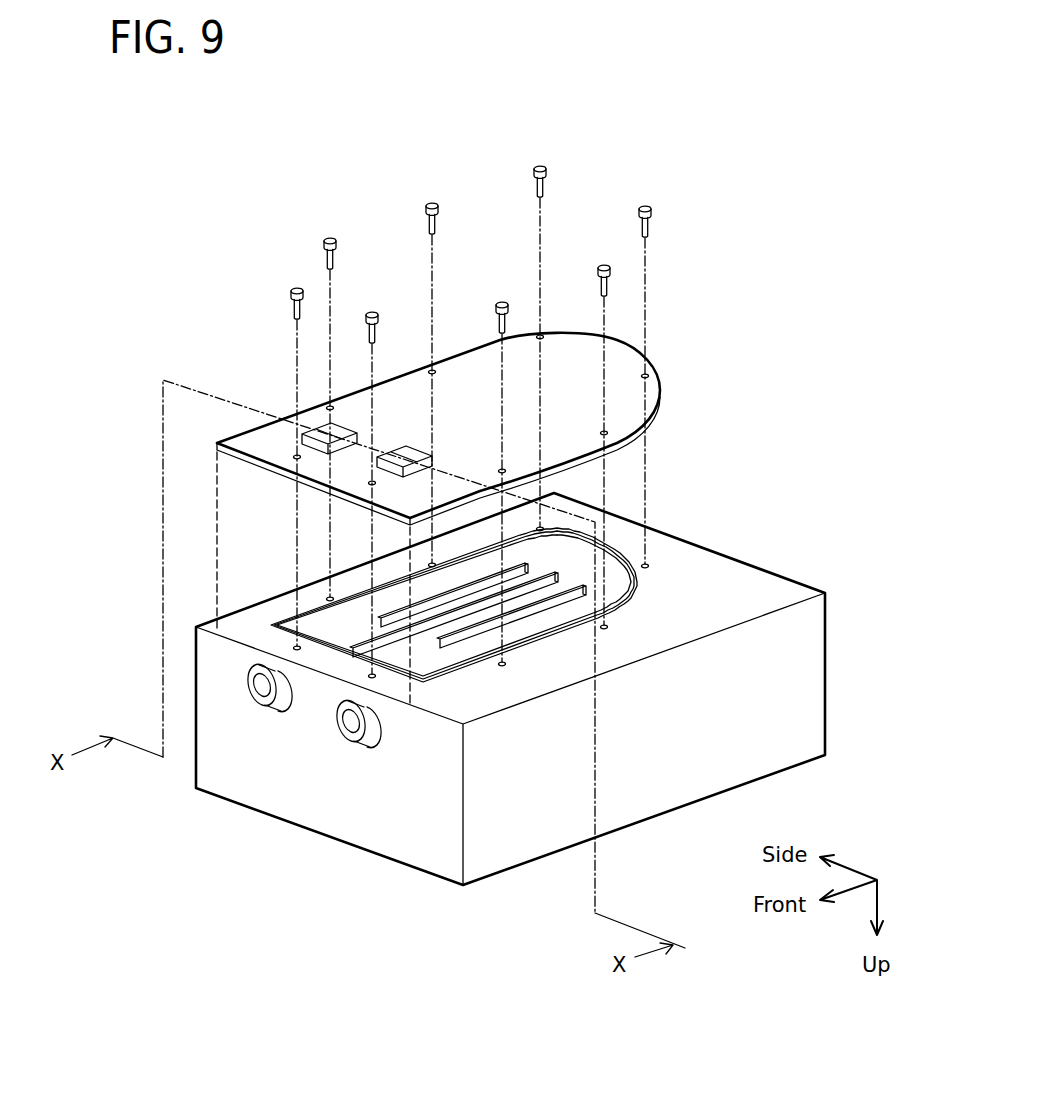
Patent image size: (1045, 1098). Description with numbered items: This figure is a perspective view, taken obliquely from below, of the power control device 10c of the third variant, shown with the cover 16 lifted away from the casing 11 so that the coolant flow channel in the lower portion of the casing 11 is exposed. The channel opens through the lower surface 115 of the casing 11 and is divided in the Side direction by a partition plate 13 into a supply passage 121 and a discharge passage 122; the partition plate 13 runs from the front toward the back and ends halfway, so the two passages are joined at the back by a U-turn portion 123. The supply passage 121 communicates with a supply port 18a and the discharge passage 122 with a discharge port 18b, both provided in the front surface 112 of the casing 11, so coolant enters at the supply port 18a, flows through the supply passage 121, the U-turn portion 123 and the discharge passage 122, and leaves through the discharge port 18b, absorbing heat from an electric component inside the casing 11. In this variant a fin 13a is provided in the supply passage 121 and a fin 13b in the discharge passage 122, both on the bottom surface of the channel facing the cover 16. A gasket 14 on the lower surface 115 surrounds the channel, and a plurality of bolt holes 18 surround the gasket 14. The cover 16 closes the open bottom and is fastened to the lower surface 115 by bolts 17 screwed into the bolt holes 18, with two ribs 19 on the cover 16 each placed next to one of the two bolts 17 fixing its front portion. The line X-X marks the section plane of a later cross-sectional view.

The power control device 10c is at (202, 208).
The casing 11 is at (800, 718).
The front surface 112 is at (210, 731).
The lower surface 115 is at (757, 576).
The gasket 14 is at (282, 624).
The supply passage 121 is at (353, 633).
The discharge passage 122 is at (425, 657).
The U-turn portion 123 is at (612, 588).
The partition plate 13 is at (543, 583).
The fin 13a is at (418, 610).
The fin 13b is at (510, 617).
The cover 16 is at (557, 350).
The bolts 17 is at (296, 287).
The bolt holes 18 is at (373, 679).
The supply port 18a is at (258, 692).
The discharge port 18b is at (351, 726).
The ribs 19 is at (333, 428).